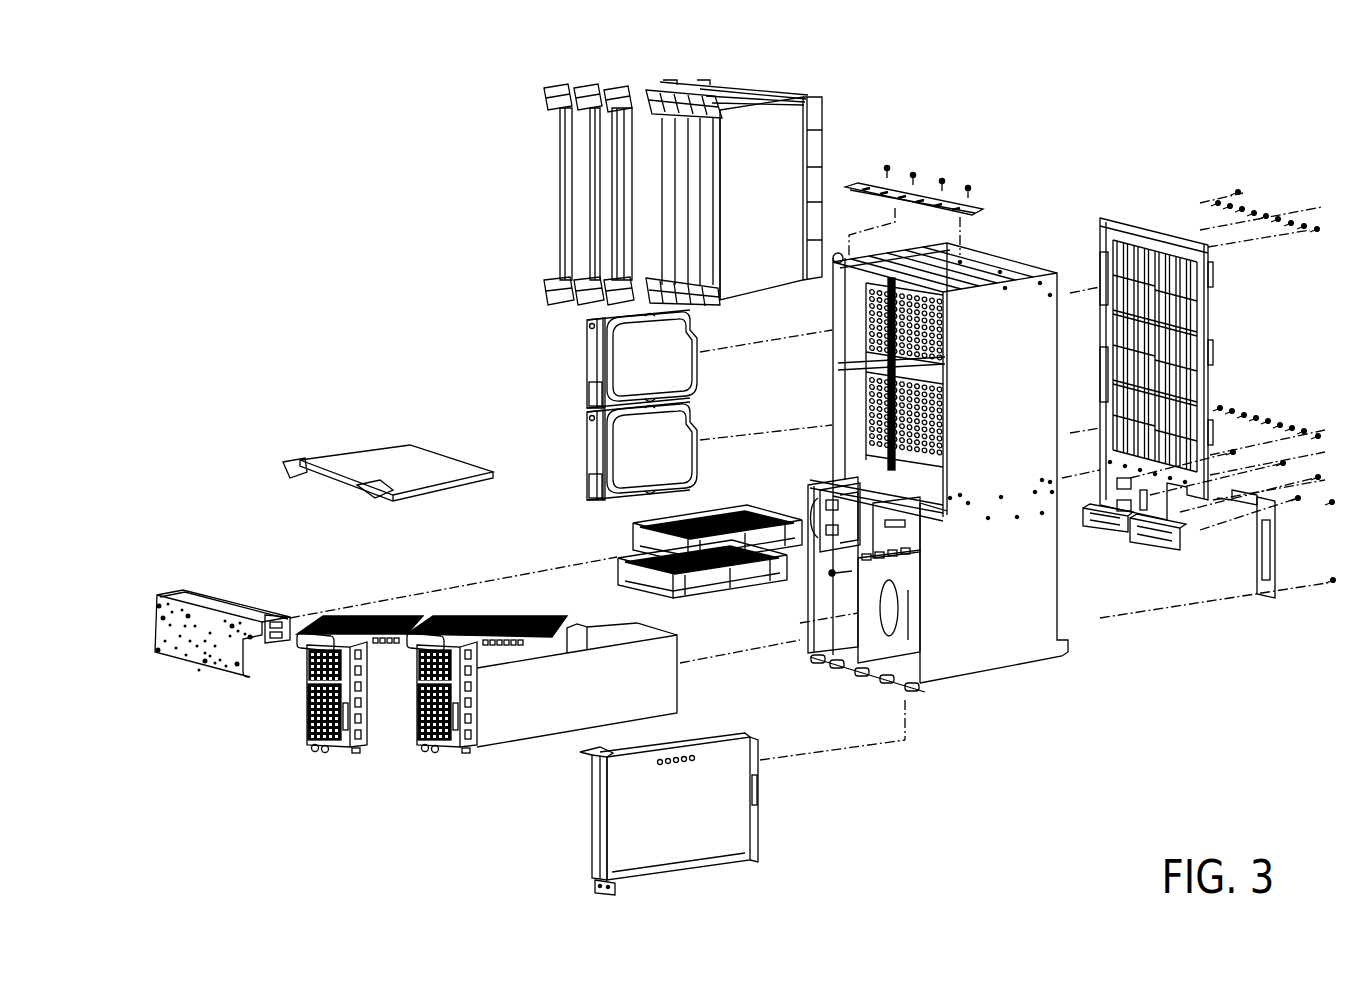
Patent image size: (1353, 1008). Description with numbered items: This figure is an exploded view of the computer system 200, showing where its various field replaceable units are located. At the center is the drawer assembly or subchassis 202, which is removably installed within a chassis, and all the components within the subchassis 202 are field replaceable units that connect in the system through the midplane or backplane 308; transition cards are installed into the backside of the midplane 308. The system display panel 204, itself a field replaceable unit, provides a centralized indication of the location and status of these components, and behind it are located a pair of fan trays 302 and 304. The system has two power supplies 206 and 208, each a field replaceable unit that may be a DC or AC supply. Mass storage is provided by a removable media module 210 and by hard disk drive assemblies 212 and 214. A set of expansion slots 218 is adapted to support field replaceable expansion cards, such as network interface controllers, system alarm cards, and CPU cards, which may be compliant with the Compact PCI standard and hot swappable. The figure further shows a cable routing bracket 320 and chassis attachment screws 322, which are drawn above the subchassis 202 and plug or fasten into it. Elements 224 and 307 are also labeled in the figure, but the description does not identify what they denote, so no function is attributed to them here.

The computer system 200 is at (1079, 161).
The subchassis 202 is at (985, 640).
The system display panel 204 is at (210, 596).
The power supply 206 is at (383, 732).
The power supply 208 is at (490, 732).
The removable media module 210 is at (605, 825).
The hard disk drive assembly 212 is at (590, 360).
The hard disk drive assembly 214 is at (590, 450).
The expansion slots 218 is at (700, 85).
The cover plate 224 is at (376, 460).
The fan tray 302 is at (700, 575).
The fan tray 304 is at (775, 537).
The connectors 307 is at (1100, 528).
The midplane 308 is at (1212, 280).
The cable routing bracket 320 is at (975, 210).
The chassis attachment screws 322 is at (968, 185).